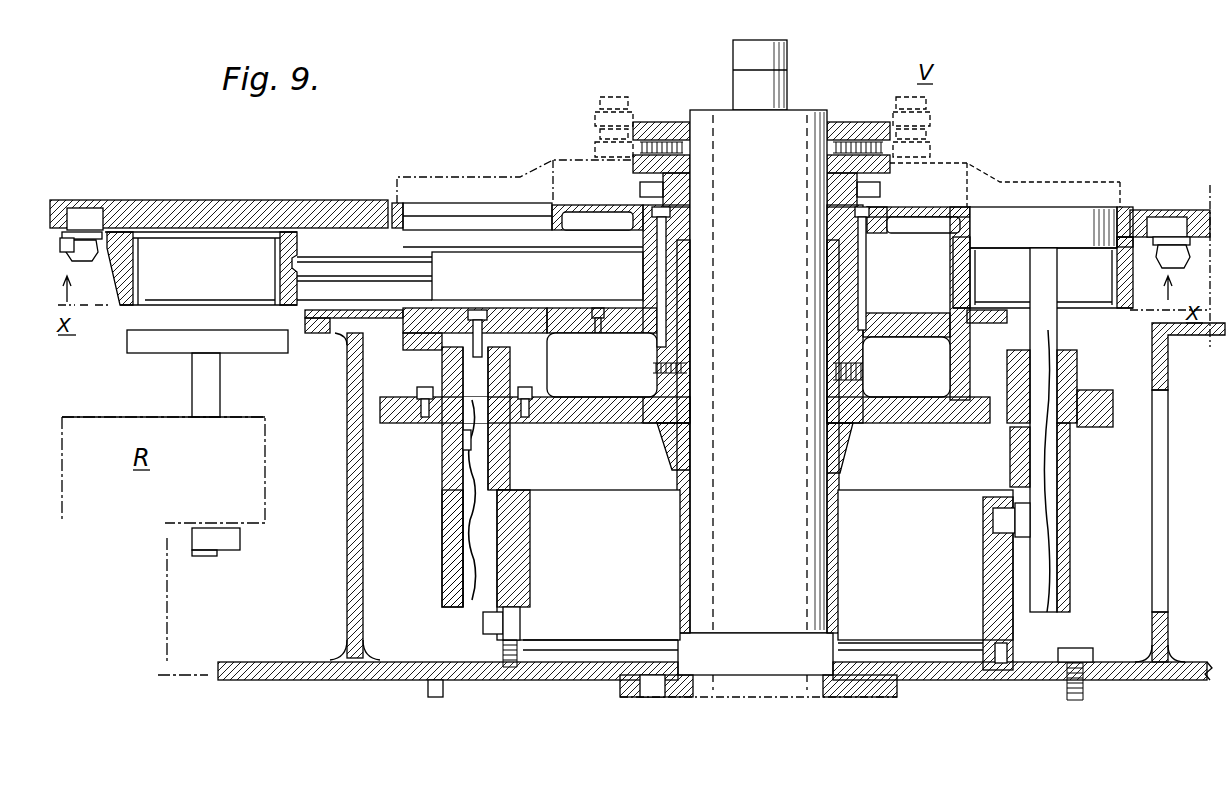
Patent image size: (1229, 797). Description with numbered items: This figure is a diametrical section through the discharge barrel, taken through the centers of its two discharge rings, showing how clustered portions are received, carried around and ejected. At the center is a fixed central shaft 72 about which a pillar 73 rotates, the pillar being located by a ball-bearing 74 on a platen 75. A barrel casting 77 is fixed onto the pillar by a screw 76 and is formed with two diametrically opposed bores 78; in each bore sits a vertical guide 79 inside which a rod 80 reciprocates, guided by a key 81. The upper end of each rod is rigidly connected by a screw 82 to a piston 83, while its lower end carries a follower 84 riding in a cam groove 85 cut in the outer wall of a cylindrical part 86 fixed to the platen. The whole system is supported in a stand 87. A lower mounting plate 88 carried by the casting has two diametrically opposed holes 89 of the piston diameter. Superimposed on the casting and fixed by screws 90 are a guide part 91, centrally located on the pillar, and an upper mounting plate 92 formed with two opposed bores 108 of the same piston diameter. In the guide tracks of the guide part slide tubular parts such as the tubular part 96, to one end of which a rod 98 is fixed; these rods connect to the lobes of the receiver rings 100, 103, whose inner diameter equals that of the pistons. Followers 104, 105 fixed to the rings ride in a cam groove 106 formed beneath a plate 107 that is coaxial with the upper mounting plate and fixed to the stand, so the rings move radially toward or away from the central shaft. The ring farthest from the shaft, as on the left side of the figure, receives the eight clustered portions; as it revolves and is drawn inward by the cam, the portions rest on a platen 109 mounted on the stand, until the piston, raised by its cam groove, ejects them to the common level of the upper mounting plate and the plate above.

The fixed central shaft 72 is at (797, 120).
The pillar 73 is at (700, 118).
The ball-bearing 74 is at (870, 665).
The platen 75 is at (1045, 663).
The screw 76 is at (866, 370).
The barrel casting 77 is at (905, 420).
The bore 78 is at (432, 418).
The vertical guide 79 is at (448, 528).
The rod 80 is at (482, 433).
The key 81 is at (468, 444).
The screw 82 is at (484, 300).
The piston 83 is at (406, 350).
The follower 84 is at (480, 622).
The cam groove 85 is at (538, 608).
The cylindrical part 86 is at (528, 542).
The stand 87 is at (1158, 380).
The lower mounting plate 88 is at (572, 302).
The hole 89 is at (988, 322).
The screw 90 is at (653, 242).
The guide part 91 is at (850, 272).
The upper mounting plate 92 is at (888, 210).
The tubular part 96 is at (440, 256).
The rod 98 is at (342, 268).
The receiver ring 100 is at (970, 285).
The receiver ring 103 is at (272, 266).
The follower 104 is at (1165, 222).
The follower 105 is at (86, 218).
The cam groove 106 is at (75, 200).
The plate 107 is at (272, 208).
The bore 108 is at (408, 205).
The platen 109 is at (348, 333).